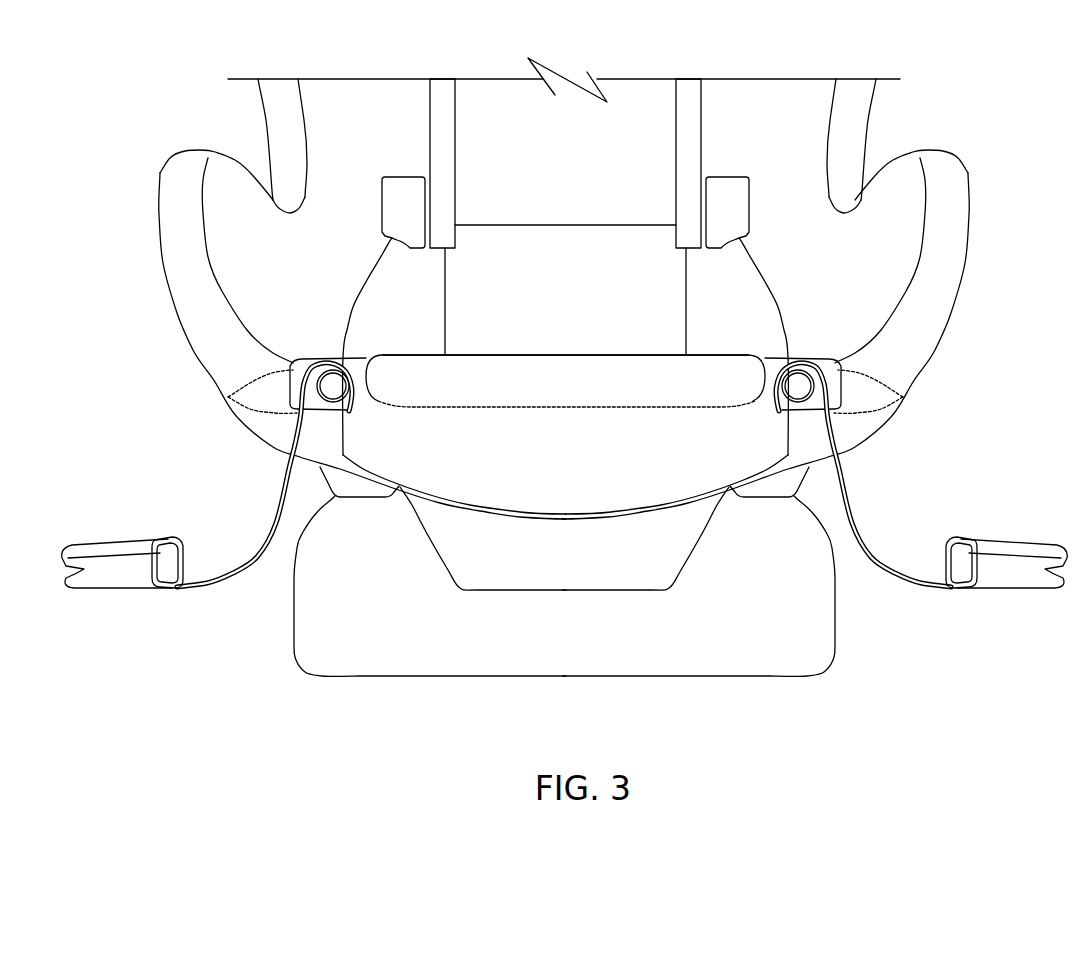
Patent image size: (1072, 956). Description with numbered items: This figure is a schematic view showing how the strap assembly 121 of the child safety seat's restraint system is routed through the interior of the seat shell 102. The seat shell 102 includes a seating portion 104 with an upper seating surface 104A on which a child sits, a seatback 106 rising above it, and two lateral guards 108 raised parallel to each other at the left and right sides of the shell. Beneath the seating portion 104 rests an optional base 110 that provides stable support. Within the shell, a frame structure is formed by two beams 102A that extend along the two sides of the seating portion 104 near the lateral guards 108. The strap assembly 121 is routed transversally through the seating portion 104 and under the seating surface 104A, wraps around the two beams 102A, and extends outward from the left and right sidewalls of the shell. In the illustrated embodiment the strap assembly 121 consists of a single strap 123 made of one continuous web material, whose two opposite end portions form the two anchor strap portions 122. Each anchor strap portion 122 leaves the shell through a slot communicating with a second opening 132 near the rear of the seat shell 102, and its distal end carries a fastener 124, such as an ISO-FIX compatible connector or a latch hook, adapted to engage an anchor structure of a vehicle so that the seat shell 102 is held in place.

The seat shell 102 is at (948, 257).
The beams 102A is at (228, 397).
The seating portion 104 is at (544, 470).
The upper seating surface 104A is at (591, 340).
The seatback 106 is at (577, 165).
The lateral guards 108 is at (188, 170).
The base 110 is at (544, 653).
The strap assembly 121 is at (441, 385).
The anchor strap portions 122 is at (262, 506).
The strap 123 is at (540, 403).
The fastener 124 is at (128, 568).
The second opening 132 is at (403, 195).